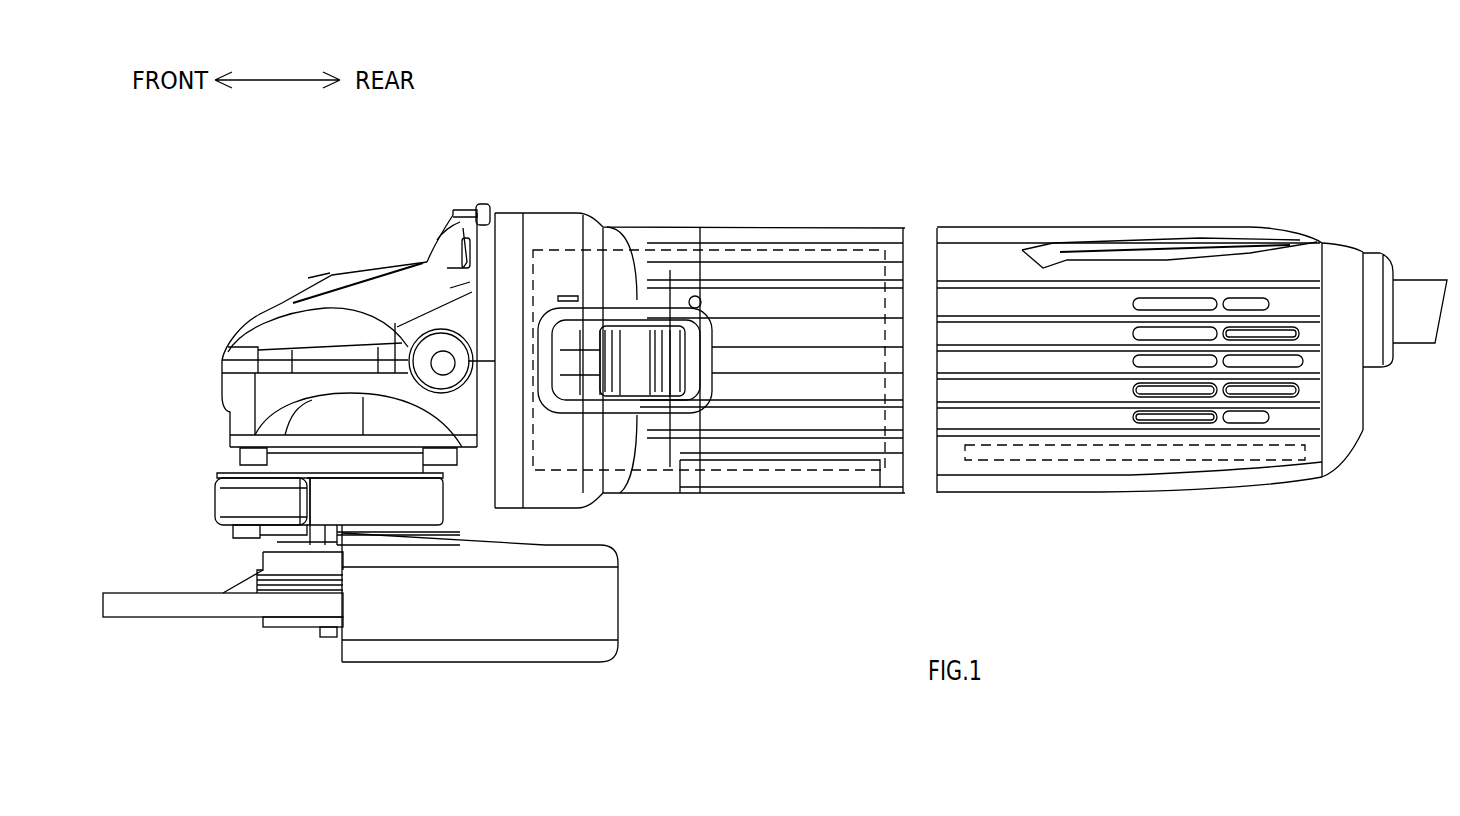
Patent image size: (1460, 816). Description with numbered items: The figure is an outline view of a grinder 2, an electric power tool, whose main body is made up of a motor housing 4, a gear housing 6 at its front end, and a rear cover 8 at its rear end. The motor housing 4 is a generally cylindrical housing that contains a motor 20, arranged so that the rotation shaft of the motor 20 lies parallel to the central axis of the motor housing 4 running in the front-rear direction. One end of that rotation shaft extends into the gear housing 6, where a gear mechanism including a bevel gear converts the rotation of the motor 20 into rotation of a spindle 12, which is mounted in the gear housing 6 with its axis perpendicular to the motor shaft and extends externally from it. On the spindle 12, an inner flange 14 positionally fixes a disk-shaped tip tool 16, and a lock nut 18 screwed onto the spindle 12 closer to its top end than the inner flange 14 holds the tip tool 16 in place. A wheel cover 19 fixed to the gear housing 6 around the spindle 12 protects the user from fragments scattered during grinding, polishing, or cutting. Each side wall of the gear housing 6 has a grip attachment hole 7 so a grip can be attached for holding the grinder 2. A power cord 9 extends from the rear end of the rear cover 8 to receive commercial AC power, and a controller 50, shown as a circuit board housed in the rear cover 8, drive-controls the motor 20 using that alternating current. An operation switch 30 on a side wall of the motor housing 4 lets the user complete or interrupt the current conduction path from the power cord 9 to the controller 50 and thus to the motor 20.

The grinder 2 is at (940, 117).
The motor housing 4 is at (780, 230).
The gear housing 6 is at (422, 258).
The grip attachment hole 7 is at (410, 340).
The rear cover 8 is at (1055, 257).
The power cord 9 is at (1414, 297).
The spindle 12 is at (328, 632).
The inner flange 14 is at (263, 567).
The tip tool 16 is at (213, 607).
The lock nut 18 is at (290, 628).
The wheel cover 19 is at (595, 603).
The motor 20 is at (852, 250).
The operation switch 30 is at (648, 345).
The controller 50 is at (1103, 465).